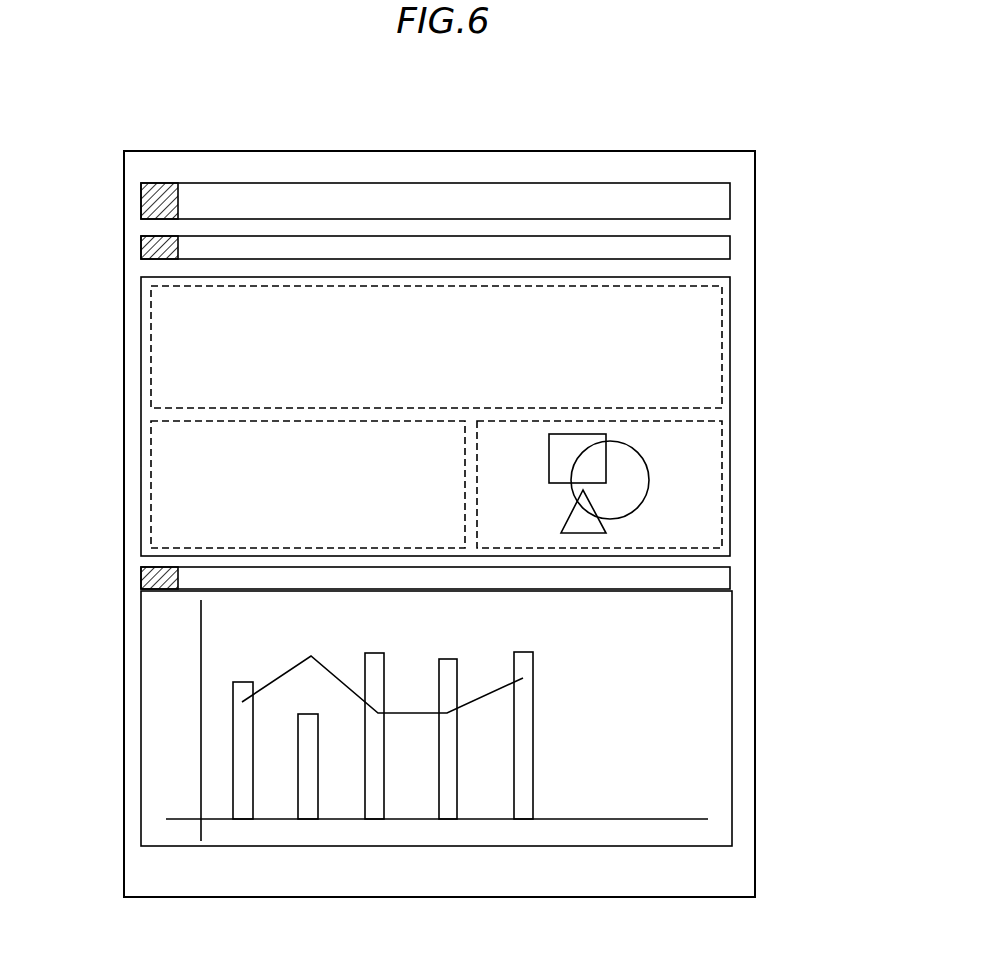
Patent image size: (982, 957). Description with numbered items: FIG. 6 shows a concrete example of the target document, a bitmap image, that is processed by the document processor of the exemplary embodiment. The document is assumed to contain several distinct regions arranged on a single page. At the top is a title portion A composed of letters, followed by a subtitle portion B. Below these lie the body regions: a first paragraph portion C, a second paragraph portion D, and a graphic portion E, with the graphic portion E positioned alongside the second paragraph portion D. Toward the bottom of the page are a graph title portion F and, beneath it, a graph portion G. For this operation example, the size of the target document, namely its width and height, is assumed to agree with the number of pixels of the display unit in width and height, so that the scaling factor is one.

The title portion A is at (735, 170).
The subtitle portion B is at (737, 243).
The first paragraph portion C is at (725, 343).
The second paragraph portion D is at (148, 520).
The graphic portion E is at (724, 460).
The graph title portion F is at (737, 575).
The graph portion G is at (735, 687).